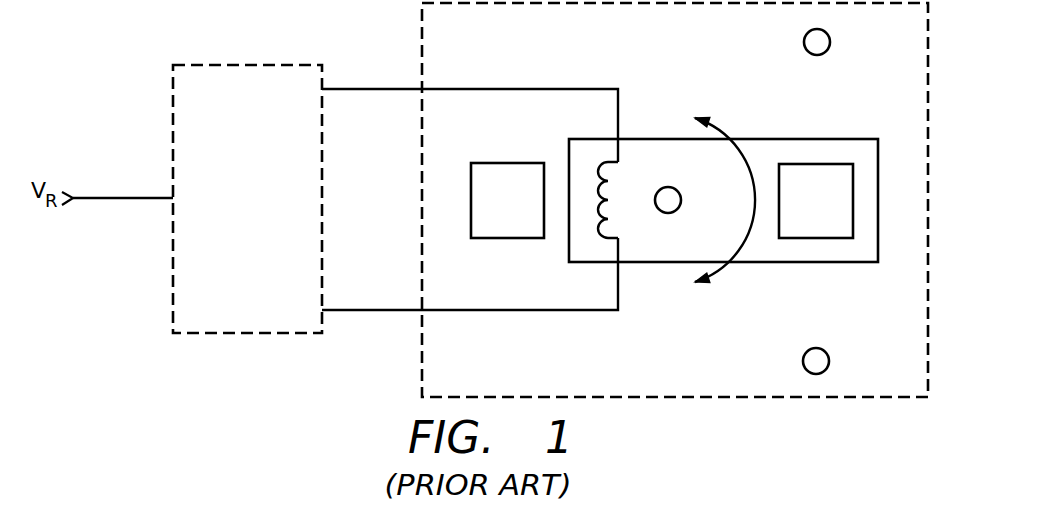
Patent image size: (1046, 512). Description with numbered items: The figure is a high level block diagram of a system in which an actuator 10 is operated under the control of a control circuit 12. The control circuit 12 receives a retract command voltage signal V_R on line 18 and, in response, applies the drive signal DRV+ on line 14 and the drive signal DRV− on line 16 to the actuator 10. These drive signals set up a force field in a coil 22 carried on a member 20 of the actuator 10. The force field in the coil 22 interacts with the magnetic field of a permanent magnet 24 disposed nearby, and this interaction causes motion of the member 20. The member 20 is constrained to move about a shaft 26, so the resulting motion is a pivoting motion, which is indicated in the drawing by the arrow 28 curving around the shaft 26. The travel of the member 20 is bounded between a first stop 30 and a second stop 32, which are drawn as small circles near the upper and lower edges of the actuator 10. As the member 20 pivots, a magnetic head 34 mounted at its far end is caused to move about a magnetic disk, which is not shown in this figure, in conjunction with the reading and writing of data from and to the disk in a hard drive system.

The actuator 10 is at (662, 373).
The control circuit 12 is at (237, 247).
The line 14 is at (386, 91).
The line 16 is at (386, 312).
The line 18 is at (125, 199).
The member 20 is at (816, 139).
The coil 22 is at (610, 192).
The permanent magnet 24 is at (494, 213).
The shaft 26 is at (681, 198).
The arrow 28 is at (718, 268).
The first stop 30 is at (830, 40).
The second stop 32 is at (829, 364).
The magnetic head 34 is at (803, 213).